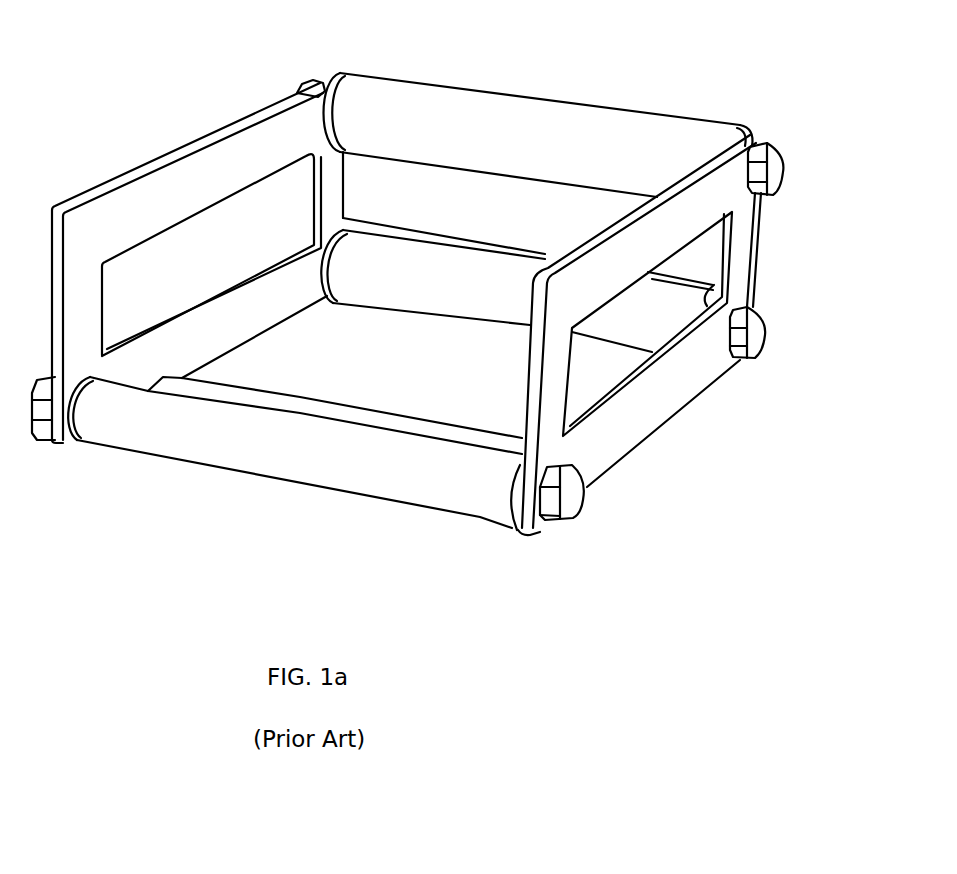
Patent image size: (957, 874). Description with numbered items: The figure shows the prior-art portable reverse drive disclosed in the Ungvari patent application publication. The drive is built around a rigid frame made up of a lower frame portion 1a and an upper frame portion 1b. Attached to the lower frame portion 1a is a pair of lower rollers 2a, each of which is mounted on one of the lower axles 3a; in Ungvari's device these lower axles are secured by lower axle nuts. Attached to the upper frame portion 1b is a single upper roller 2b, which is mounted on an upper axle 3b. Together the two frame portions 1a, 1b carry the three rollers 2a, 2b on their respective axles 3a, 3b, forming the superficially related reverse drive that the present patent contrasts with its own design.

The lower frame portion 1a is at (640, 417).
The upper frame portion 1b is at (200, 147).
The lower rollers 2a is at (432, 300).
The upper roller 2b is at (603, 120).
The lower axles 3a is at (752, 312).
The upper axle 3b is at (770, 147).